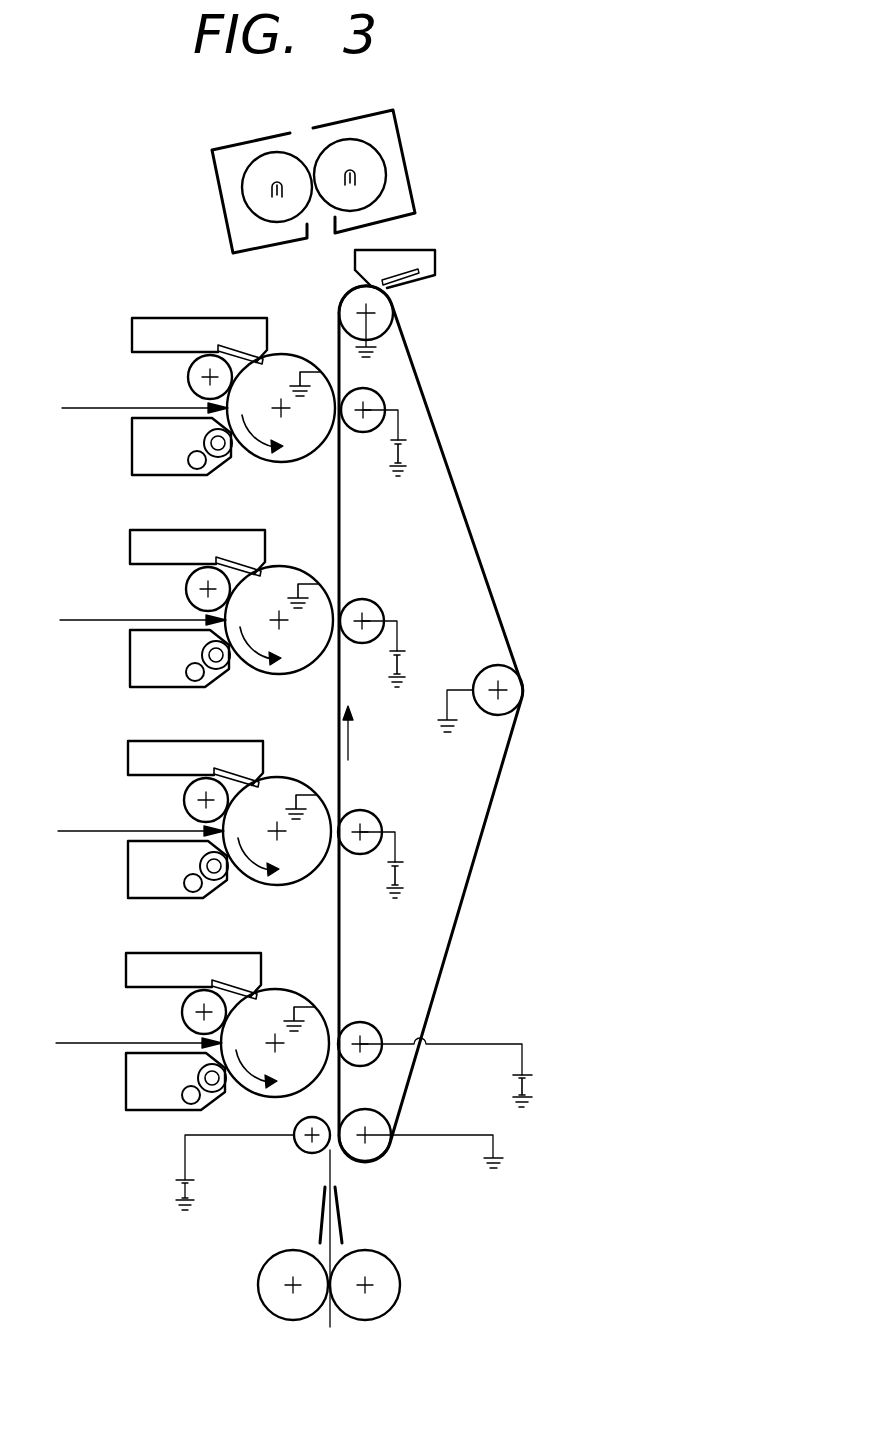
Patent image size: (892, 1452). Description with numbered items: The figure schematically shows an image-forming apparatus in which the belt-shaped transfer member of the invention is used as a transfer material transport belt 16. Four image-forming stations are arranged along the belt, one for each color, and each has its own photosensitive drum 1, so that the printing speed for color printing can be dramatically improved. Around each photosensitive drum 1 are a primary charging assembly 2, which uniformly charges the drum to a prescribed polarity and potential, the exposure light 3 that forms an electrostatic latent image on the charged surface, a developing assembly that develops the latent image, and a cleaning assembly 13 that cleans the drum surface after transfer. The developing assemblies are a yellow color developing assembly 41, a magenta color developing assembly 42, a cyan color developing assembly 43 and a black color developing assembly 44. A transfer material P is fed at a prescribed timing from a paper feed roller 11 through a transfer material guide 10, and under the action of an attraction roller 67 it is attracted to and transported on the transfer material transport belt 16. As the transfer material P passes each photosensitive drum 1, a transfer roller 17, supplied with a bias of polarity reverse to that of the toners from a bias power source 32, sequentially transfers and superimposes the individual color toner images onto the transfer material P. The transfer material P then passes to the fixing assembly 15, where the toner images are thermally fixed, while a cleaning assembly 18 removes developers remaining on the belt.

The photosensitive drum 1 is at (308, 462).
The primary charging assembly 2 is at (190, 377).
The light 3 is at (83, 408).
The transfer material guide 10 is at (343, 1222).
The paper feed roller 11 is at (395, 1290).
The cleaning assembly 13 is at (137, 332).
The fixing assembly 15 is at (377, 168).
The transfer material transport belt 16 is at (452, 932).
The transfer roller 17 is at (378, 398).
The cleaning assembly 18 is at (425, 263).
The bias power source 32 is at (392, 443).
The yellow color developing assembly 41 is at (136, 1081).
The magenta color developing assembly 42 is at (138, 869).
The cyan color developing assembly 43 is at (140, 658).
The black color developing assembly 44 is at (132, 448).
The attraction roller 67 is at (307, 1150).
The transfer material P is at (332, 1172).